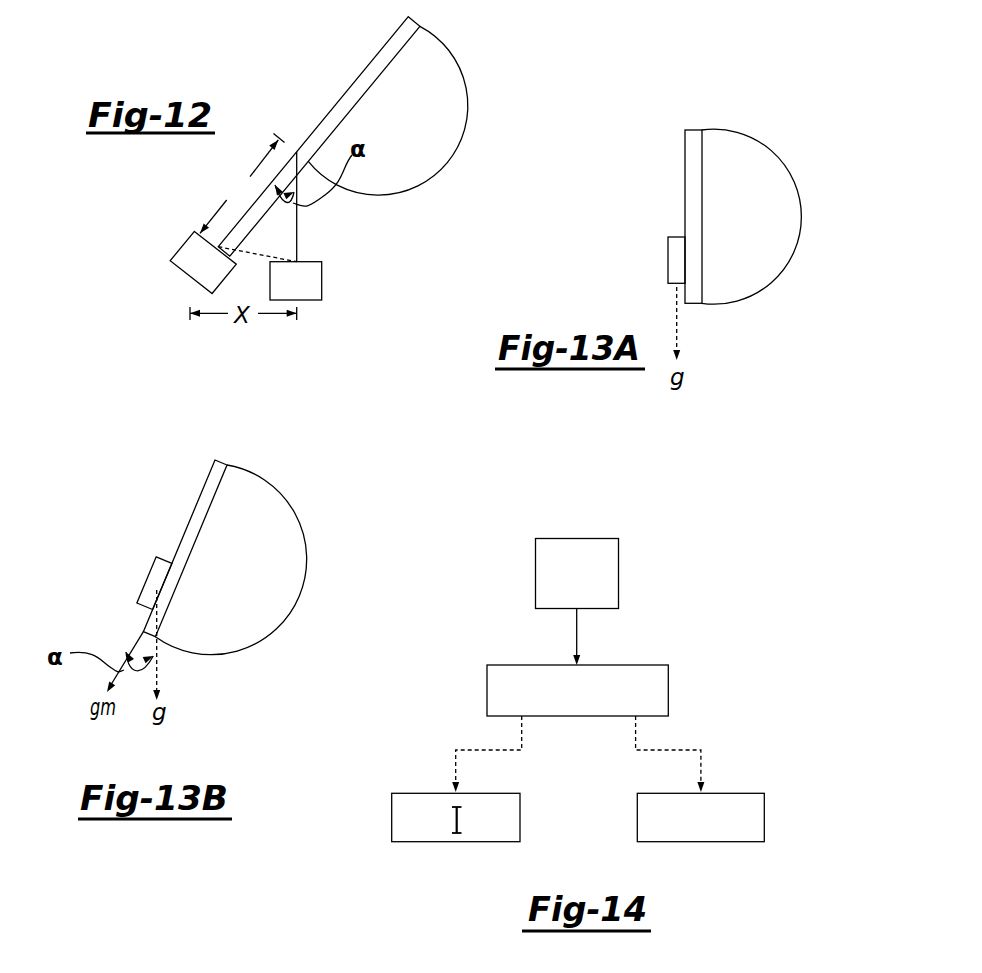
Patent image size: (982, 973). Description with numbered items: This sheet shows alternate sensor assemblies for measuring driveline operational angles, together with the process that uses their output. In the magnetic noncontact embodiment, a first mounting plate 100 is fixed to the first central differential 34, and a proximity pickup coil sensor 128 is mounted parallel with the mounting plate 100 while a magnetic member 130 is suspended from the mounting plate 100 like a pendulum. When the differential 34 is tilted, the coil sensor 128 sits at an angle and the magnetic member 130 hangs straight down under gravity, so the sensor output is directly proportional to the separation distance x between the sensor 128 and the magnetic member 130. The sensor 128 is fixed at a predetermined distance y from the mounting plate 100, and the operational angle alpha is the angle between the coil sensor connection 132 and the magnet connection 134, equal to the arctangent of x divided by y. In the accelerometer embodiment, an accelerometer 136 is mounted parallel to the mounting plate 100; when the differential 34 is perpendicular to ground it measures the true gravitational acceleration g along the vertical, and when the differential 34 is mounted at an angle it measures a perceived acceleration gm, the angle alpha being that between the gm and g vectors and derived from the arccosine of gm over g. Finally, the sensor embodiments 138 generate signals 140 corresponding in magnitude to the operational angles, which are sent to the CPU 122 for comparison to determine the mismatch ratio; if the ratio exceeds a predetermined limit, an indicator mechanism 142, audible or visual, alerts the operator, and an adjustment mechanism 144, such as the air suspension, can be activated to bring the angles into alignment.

In FIG. 12, the first central differential 34 is at (437, 100).
In FIG. 13A, the first central differential 34 is at (750, 157).
In FIG. 13B, the first central differential 34 is at (280, 553).
In FIG. 12, the first mounting plate 100 is at (400, 37).
In FIG. 13A, the first mounting plate 100 is at (690, 142).
In FIG. 13B, the first mounting plate 100 is at (213, 475).
In FIG. 14, the CPU 122 is at (643, 690).
In FIG. 12, the proximity pickup coil sensor 128 is at (192, 258).
In FIG. 12, the magnetic member 130 is at (307, 287).
In FIG. 12, the coil sensor connection 132 is at (278, 163).
In FIG. 12, the magnet connection 134 is at (297, 220).
In FIG. 13A, the accelerometer 136 is at (673, 247).
In FIG. 13B, the accelerometer 136 is at (153, 566).
In FIG. 14, the sensor embodiments 138 is at (605, 563).
In FIG. 14, the signals 140 is at (578, 637).
In FIG. 14, the indicator mechanism 142 is at (423, 802).
In FIG. 14, the adjustment mechanism 144 is at (746, 802).